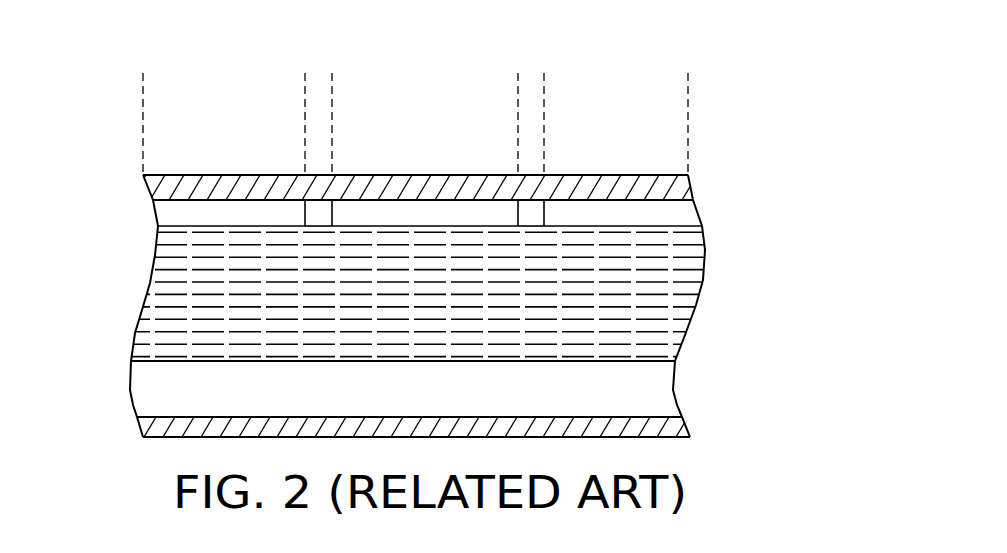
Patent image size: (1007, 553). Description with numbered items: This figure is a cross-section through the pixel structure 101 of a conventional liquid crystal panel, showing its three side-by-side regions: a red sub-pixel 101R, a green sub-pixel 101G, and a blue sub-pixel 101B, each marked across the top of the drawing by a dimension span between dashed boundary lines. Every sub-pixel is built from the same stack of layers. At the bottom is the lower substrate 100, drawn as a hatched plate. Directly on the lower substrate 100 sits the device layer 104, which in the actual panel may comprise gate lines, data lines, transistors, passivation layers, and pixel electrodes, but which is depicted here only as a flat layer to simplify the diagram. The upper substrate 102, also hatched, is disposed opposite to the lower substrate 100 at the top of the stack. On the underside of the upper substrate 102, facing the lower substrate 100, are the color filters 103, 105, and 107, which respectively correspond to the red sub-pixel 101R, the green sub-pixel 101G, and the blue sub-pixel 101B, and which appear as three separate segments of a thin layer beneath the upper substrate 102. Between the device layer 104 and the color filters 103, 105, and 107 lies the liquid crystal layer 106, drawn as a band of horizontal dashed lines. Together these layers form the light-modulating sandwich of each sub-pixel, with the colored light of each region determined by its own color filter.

The pixel structure 101 is at (43, 40).
The red sub-pixel 101R is at (143, 79).
The green sub-pixel 101G is at (332, 79).
The blue sub-pixel 101B is at (544, 79).
The lower substrate 100 is at (683, 427).
The upper substrate 102 is at (680, 183).
The color filter 103 is at (222, 208).
The device layer 104 is at (670, 388).
The color filter 105 is at (426, 210).
The liquid crystal layer 106 is at (683, 302).
The color filter 107 is at (607, 210).